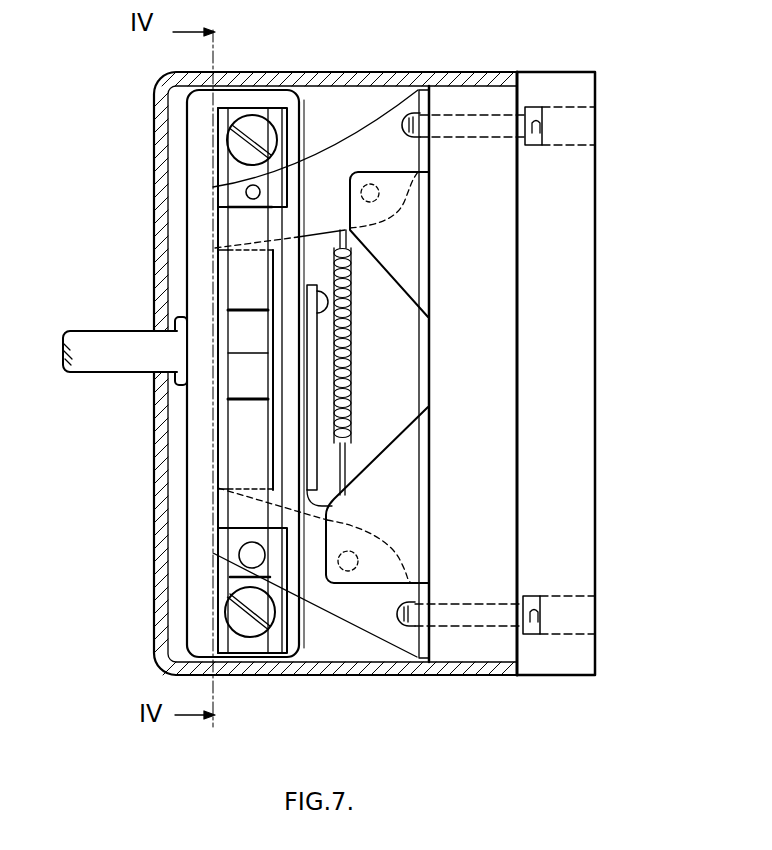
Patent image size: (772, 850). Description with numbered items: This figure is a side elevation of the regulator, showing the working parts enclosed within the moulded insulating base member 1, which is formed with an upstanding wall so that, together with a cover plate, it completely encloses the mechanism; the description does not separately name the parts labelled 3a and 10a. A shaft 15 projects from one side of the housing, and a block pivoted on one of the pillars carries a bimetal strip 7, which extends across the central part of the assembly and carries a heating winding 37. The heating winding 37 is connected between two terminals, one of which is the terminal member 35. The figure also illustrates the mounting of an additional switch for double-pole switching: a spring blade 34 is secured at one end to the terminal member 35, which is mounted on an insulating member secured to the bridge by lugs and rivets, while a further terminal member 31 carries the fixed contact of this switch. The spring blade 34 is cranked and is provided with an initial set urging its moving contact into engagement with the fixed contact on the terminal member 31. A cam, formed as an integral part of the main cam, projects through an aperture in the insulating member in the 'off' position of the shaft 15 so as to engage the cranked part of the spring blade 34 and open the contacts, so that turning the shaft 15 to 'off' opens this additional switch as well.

The base member 1 is at (583, 336).
The frame 3a is at (295, 79).
The bimetal strip 7 is at (348, 452).
The mounting bracket 10a is at (329, 502).
The shaft 15 is at (116, 333).
The terminal member 31 is at (228, 587).
The spring blade 34 is at (240, 268).
The terminal member 35 is at (231, 112).
The heating winding 37 is at (352, 322).